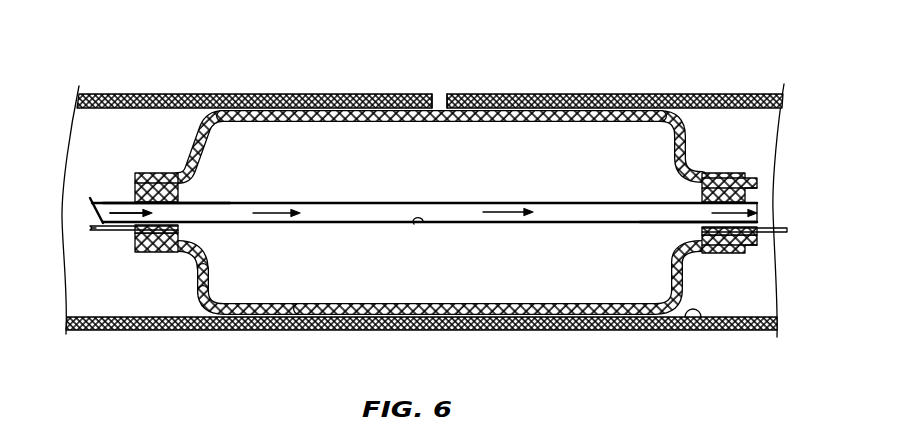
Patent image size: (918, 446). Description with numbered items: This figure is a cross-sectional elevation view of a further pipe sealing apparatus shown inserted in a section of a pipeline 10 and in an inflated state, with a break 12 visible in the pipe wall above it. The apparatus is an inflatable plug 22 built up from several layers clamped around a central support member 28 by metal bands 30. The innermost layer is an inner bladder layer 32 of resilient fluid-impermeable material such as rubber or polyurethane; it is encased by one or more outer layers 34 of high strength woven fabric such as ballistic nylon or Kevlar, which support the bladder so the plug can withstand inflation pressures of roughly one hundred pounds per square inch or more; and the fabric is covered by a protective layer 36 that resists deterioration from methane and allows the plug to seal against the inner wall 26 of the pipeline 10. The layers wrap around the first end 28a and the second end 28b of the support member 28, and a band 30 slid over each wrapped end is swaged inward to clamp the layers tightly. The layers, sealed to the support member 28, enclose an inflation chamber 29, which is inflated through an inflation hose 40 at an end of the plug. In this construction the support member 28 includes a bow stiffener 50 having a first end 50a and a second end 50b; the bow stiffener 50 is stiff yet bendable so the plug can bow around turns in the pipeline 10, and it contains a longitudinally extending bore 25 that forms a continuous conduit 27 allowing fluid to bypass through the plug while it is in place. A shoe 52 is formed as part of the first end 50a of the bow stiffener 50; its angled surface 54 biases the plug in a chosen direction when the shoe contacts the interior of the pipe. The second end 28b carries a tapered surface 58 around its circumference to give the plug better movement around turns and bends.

The pipeline 10 is at (780, 93).
The break 12 is at (445, 66).
The inflatable plug 22 is at (677, 122).
The longitudinally extending bore 25 is at (414, 224).
The inner wall 26 is at (703, 320).
The continuous conduit 27 is at (346, 202).
The support member 28 is at (485, 191).
The first end 28a is at (139, 264).
The second end 28b is at (728, 263).
The inflation chamber 29 is at (350, 282).
The metal band 30 is at (157, 172).
The inner bladder layer 32 is at (207, 253).
The outer layers 34 is at (200, 268).
The protective layer 36 is at (197, 290).
The inflation hose 40 is at (110, 233).
The bow stiffener 50 is at (565, 202).
The first end of bow stiffener 50a is at (222, 201).
The second end of bow stiffener 50b is at (682, 222).
The shoe 52 is at (122, 201).
The angled surface 54 is at (97, 211).
The tapered surface 58 is at (753, 175).